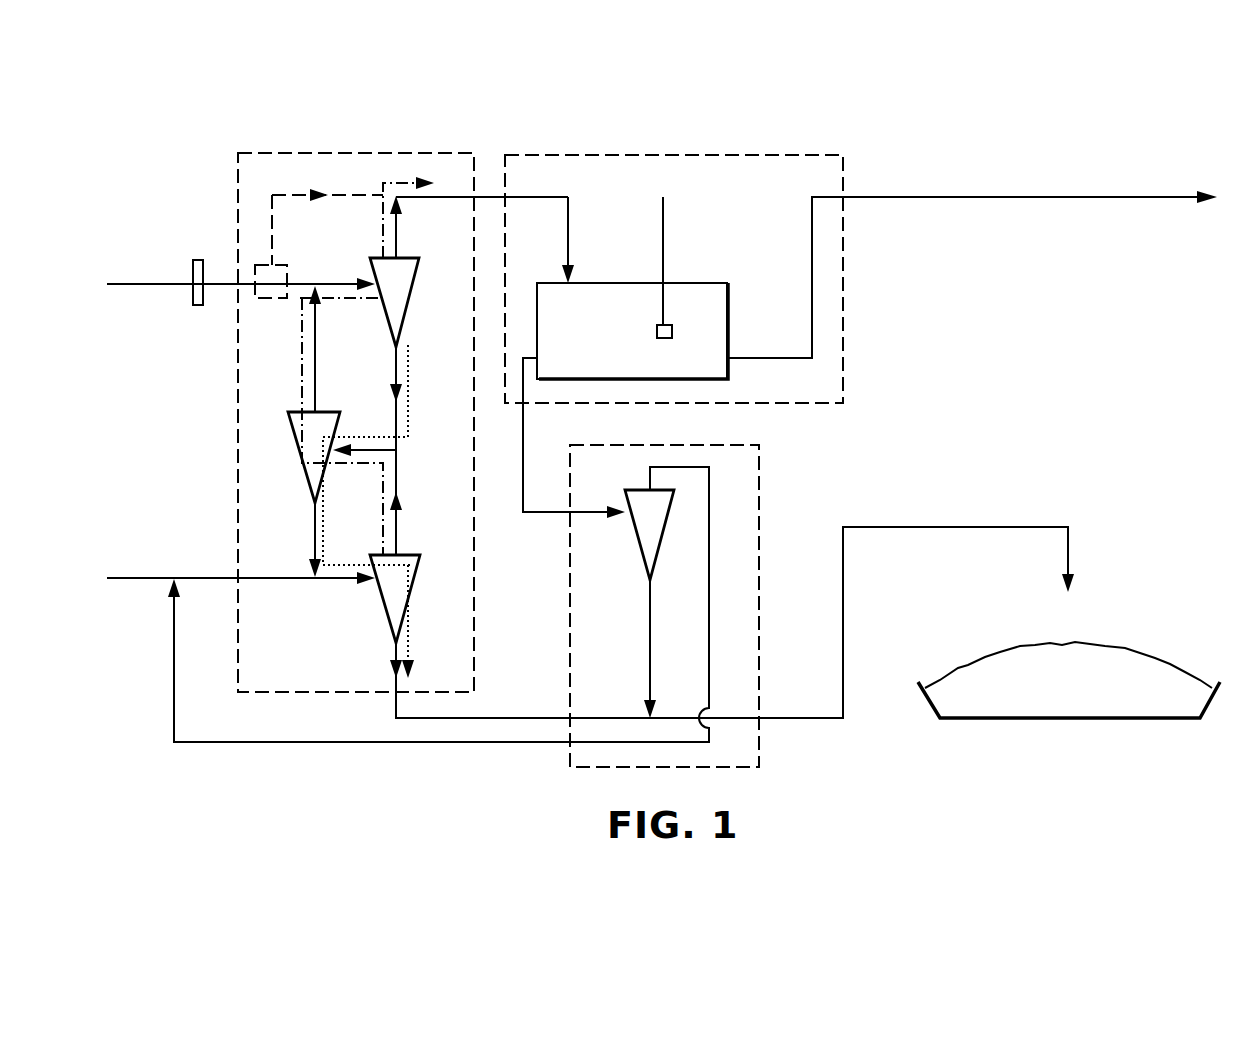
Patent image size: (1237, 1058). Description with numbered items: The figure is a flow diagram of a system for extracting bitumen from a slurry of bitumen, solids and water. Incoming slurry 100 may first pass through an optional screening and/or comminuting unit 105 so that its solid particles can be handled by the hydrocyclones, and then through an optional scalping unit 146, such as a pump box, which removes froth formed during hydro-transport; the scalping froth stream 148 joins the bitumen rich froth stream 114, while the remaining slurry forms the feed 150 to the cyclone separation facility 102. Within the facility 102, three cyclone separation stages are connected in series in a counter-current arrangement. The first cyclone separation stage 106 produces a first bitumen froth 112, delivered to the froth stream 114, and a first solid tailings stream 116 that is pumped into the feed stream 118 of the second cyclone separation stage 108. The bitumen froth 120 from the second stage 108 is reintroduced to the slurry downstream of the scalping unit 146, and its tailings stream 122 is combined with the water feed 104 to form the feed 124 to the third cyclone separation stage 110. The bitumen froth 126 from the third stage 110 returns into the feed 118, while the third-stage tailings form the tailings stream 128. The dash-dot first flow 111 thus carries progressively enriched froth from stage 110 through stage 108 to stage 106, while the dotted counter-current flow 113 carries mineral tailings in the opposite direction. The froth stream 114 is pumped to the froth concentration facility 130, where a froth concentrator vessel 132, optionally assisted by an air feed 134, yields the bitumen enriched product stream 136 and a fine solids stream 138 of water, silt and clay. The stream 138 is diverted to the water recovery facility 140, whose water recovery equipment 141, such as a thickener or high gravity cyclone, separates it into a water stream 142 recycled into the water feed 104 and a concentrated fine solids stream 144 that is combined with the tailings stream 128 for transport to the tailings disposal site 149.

The slurry 100 is at (165, 282).
The cyclone separation facility 102 is at (275, 152).
The water feed 104 is at (135, 578).
The screening and/or comminuting unit 105 is at (190, 299).
The first cyclone separation stage 106 is at (415, 298).
The second cyclone separation stage 108 is at (300, 438).
The third cyclone separation stage 110 is at (416, 580).
The first flow 111 is at (383, 221).
The first bitumen froth 112 is at (399, 235).
The counter-current flow 113 is at (412, 638).
The bitumen rich froth stream 114 is at (572, 225).
The first solid tailings stream 116 is at (392, 378).
The feed stream 118 is at (373, 437).
The bitumen froth 120 is at (318, 355).
The tailings stream 122 is at (313, 525).
The feed 124 is at (337, 583).
The bitumen froth 126 is at (400, 525).
The tailings stream 128 is at (395, 708).
The froth concentration facility 130 is at (727, 153).
The froth concentrator vessel 132 is at (692, 292).
The air feed 134 is at (668, 225).
The product stream 136 is at (1000, 196).
The fine solids stream 138 is at (527, 423).
The water recovery facility 140 is at (760, 645).
The water recovery equipment 141 is at (660, 545).
The water stream 142 is at (709, 645).
The concentrated fine solids stream 144 is at (648, 655).
The scalping unit 146 is at (274, 302).
The froth stream 148 is at (300, 195).
The tailings disposal site 149 is at (1072, 720).
The feed 150 is at (302, 283).